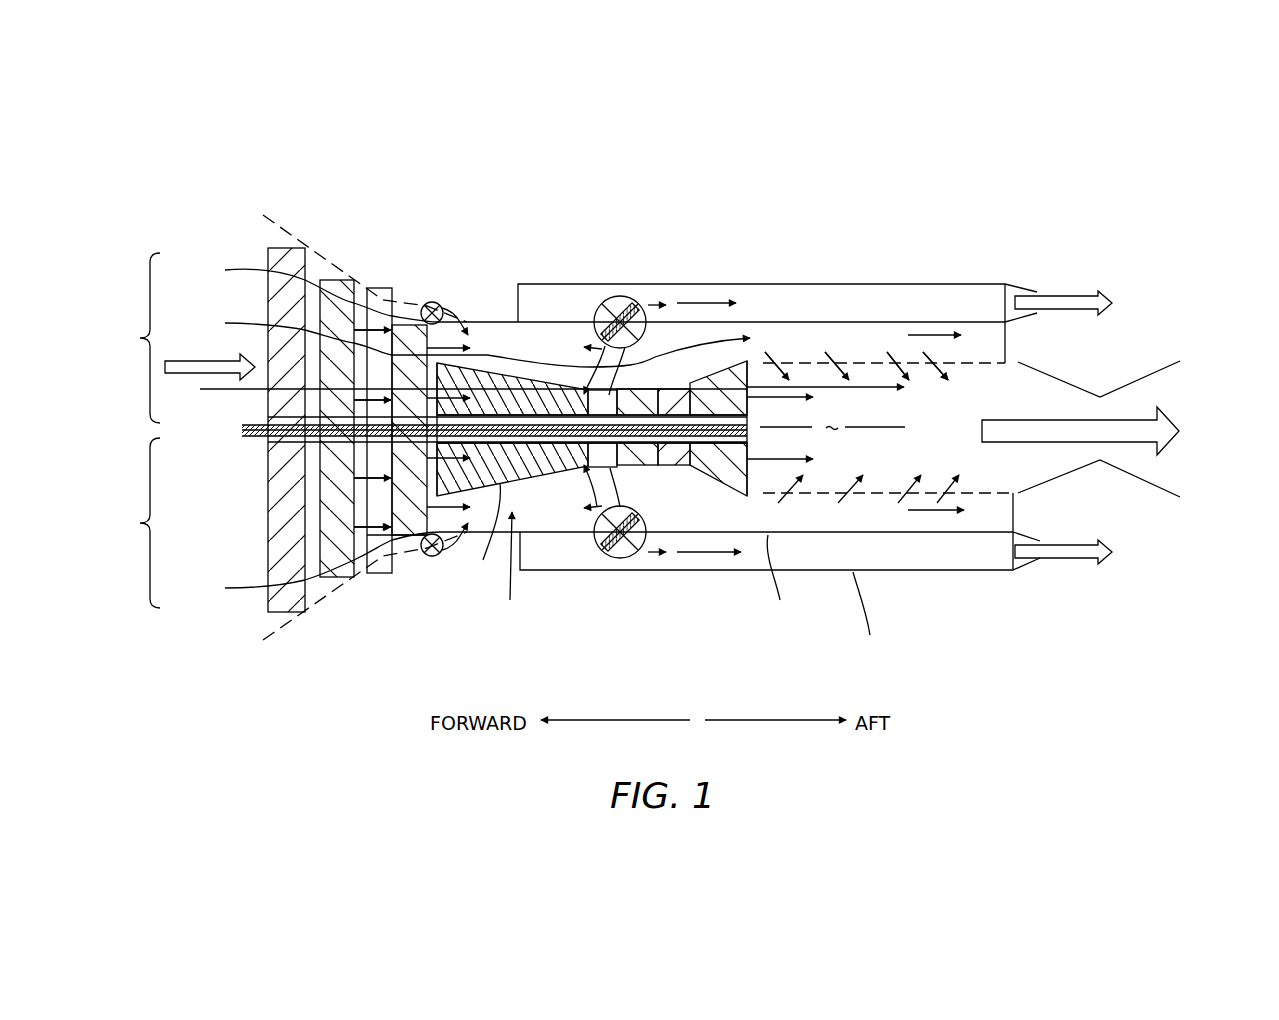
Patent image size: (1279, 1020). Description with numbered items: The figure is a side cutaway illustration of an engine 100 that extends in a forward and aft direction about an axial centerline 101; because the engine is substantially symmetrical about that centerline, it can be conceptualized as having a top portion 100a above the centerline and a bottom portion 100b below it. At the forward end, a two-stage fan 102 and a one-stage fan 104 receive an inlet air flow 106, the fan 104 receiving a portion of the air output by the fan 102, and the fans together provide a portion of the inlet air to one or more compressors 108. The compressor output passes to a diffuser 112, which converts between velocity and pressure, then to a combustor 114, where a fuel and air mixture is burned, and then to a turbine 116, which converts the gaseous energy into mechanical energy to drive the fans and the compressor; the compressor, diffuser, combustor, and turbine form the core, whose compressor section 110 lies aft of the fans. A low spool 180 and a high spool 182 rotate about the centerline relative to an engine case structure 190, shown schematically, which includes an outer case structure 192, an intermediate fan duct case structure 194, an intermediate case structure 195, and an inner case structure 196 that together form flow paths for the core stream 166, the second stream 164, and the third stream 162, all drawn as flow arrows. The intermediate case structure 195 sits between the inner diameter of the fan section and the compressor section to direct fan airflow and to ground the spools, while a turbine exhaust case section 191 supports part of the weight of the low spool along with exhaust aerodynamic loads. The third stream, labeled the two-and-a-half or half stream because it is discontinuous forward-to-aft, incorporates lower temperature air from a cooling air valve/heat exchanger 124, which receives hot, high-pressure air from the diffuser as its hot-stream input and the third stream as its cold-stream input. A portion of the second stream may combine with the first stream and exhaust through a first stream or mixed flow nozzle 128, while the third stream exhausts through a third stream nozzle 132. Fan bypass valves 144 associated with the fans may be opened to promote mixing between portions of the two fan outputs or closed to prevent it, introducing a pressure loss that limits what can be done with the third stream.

The engine 100 is at (914, 198).
The top portion 100a is at (117, 338).
The bottom portion 100b is at (117, 523).
The axial centerline 101 is at (233, 470).
The two-stage fan 102 is at (342, 580).
The one-stage fan 104 is at (405, 548).
The inlet air flow 106 is at (207, 360).
The compressor 108 is at (537, 467).
The compressor section 110 is at (510, 572).
The diffuser 112 is at (593, 507).
The combustor 114 is at (637, 397).
The turbine 116 is at (717, 473).
The cooling air valve/heat exchanger 124 is at (620, 296).
The first stream nozzle or mixed flow nozzle 128 is at (1176, 421).
The third stream nozzle 132 is at (1068, 292).
The fan bypass valve 144 is at (435, 300).
The third stream 162 is at (717, 292).
The second stream 164 is at (760, 300).
The core stream 166 is at (210, 392).
The low spool 180 is at (252, 433).
The high spool 182 is at (477, 536).
The engine case structure 190 is at (904, 588).
The turbine exhaust case section 191 is at (725, 500).
The outer case structure 192 is at (871, 615).
The intermediate fan duct case structure 194 is at (783, 581).
The intermediate case structure 195 is at (392, 312).
The inner case structure 196 is at (490, 353).